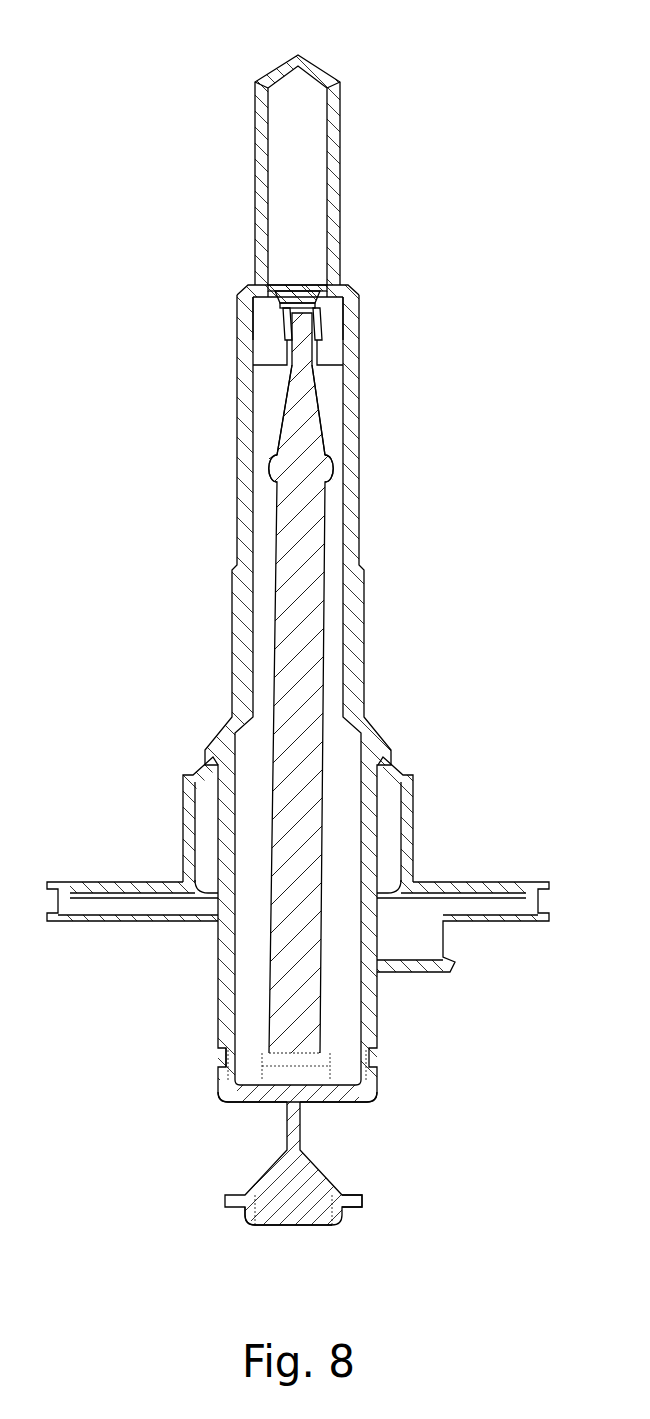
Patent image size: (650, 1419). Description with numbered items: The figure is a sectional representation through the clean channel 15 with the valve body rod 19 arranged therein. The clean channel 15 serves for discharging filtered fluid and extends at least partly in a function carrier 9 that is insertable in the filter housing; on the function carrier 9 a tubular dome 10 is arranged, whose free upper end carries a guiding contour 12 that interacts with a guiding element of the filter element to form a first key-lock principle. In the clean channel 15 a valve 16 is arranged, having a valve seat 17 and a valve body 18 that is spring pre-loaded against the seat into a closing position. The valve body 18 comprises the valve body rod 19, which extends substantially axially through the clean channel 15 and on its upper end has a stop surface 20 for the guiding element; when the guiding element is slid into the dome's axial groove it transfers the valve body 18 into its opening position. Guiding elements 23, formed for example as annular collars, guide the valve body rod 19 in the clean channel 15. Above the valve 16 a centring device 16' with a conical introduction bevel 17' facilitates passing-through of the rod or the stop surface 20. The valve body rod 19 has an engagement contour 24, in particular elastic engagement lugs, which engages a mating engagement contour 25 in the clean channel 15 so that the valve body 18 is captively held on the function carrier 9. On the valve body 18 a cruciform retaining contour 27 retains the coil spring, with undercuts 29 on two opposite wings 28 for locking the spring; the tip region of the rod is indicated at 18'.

The function carrier 9 is at (420, 486).
The tubular dome 10 is at (355, 288).
The guiding contour 12 is at (320, 65).
The clean channel 15 is at (263, 624).
The valve 16 is at (298, 1033).
The centring device 16' is at (250, 344).
The valve seat 17 is at (340, 1121).
The conical introduction bevel 17' is at (246, 252).
The valve body 18 is at (335, 1163).
The plunger tip 18' is at (375, 410).
The valve body rod 19 is at (312, 578).
The stop surface 20 is at (305, 300).
The guiding elements 23 is at (282, 469).
The engagement contour 24 is at (323, 322).
The mating engagement contour 25 is at (297, 284).
The retaining contour 27 is at (297, 1240).
The wings 28 is at (268, 1226).
The undercuts 29 is at (350, 1208).